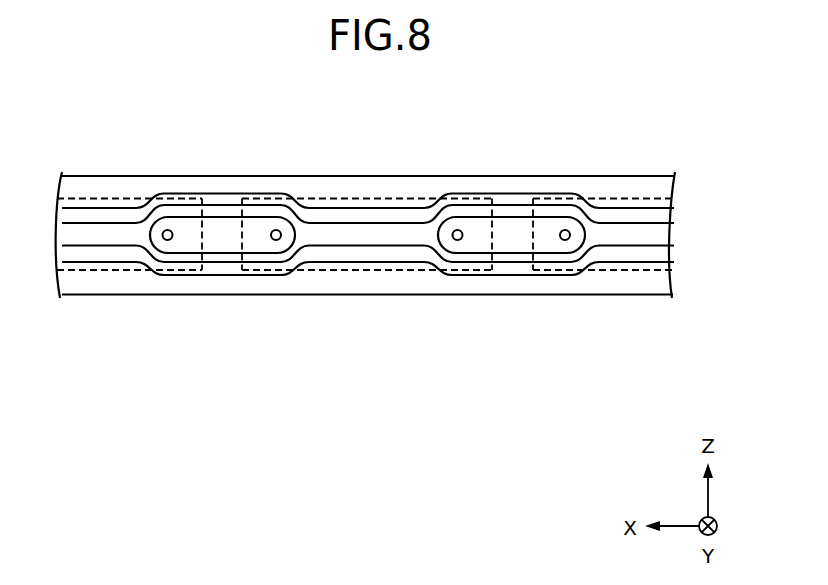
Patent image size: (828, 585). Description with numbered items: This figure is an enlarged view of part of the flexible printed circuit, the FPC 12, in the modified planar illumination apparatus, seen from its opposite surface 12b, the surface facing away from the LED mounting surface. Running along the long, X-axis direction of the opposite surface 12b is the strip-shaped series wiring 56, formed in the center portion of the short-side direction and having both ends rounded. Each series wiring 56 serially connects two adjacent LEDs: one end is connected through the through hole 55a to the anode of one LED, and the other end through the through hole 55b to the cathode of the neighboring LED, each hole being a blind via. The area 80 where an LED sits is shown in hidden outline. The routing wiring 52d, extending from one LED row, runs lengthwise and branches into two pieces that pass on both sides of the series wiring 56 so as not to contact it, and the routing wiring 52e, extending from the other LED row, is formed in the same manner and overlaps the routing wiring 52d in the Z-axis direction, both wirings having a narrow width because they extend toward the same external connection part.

The FPC 12 is at (214, 157).
The opposite surface 12b is at (118, 190).
The routing wiring 52d is at (367, 215).
The routing wiring 52e is at (368, 253).
The through hole 55a is at (168, 240).
The through hole 55b is at (276, 240).
The series wiring 56 is at (219, 238).
The area 80 is at (630, 272).